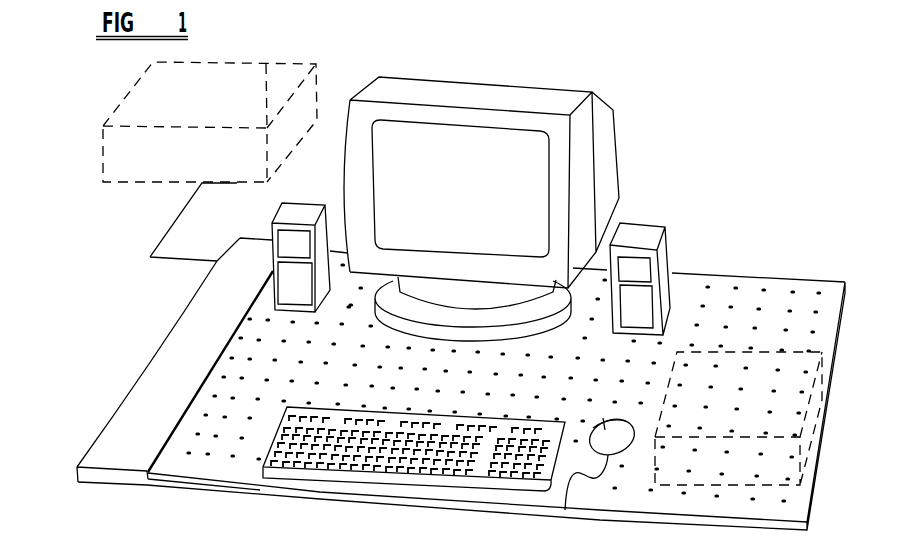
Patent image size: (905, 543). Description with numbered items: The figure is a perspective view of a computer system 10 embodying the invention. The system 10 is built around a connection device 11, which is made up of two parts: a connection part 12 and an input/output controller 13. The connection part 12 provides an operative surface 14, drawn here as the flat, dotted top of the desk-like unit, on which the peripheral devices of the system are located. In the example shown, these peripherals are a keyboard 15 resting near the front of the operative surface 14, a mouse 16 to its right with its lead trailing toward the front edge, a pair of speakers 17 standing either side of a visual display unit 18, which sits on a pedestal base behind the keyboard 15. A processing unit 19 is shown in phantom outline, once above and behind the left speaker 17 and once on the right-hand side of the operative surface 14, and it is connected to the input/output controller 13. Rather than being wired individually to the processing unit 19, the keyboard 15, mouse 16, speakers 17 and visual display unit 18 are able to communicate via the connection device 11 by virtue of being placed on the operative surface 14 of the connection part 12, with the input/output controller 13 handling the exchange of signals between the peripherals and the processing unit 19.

The computer system 10 is at (711, 147).
The connection device 11 is at (148, 487).
The connection part 12 is at (228, 487).
The input/output controller 13 is at (107, 467).
The operative surface 14 is at (245, 442).
The keyboard 15 is at (378, 478).
The mouse 16 is at (565, 510).
The speakers 17 is at (277, 213).
The visual display unit 18 is at (437, 78).
The processing unit 19 is at (266, 65).